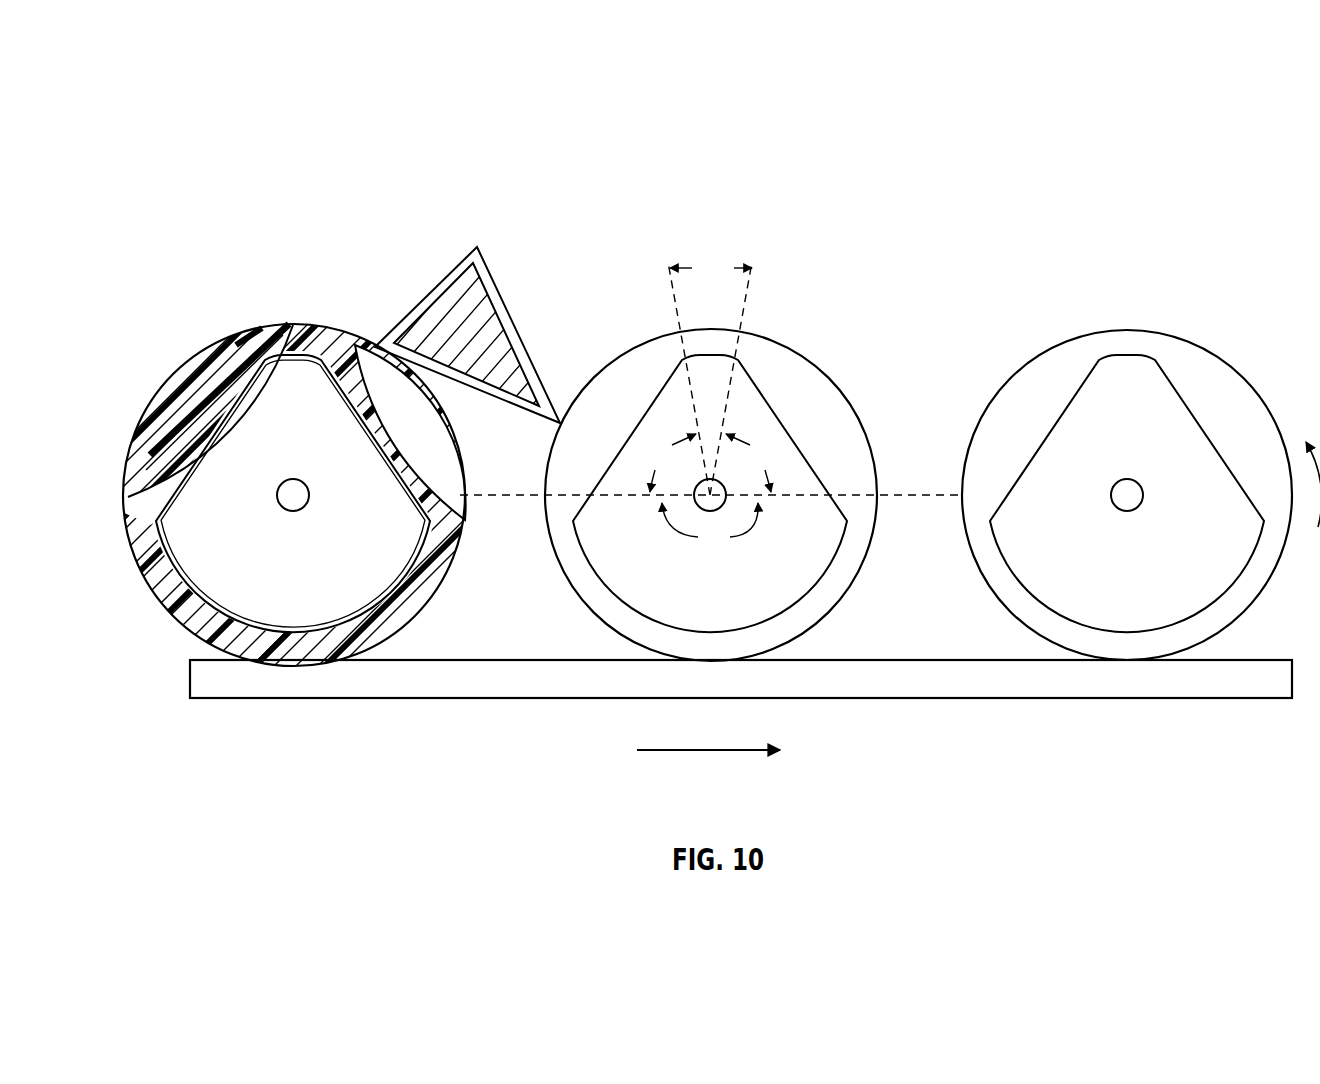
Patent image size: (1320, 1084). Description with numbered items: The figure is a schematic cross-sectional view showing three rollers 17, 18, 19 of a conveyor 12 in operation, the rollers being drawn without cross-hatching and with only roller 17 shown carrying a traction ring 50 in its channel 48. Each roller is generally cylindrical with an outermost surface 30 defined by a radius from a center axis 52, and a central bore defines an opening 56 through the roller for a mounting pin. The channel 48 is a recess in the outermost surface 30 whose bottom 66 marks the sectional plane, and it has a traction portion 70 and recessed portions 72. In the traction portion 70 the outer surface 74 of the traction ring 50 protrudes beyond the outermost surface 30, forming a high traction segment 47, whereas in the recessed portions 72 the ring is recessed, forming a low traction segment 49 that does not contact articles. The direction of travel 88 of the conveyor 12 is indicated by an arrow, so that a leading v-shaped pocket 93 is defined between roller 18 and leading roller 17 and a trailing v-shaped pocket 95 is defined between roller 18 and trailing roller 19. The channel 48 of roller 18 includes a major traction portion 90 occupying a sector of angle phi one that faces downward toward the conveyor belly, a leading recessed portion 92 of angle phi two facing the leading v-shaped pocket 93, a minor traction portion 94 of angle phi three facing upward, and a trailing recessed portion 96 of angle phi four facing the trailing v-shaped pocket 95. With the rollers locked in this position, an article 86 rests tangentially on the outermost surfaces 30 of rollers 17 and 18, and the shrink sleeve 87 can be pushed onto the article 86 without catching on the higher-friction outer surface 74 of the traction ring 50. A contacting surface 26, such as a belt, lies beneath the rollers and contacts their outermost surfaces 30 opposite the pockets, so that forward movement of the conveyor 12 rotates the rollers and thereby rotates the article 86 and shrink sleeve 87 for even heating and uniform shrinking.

The conveyor 12 is at (1148, 228).
The roller 17 is at (353, 490).
The roller 18 is at (710, 440).
The roller 19 is at (1155, 481).
The contacting surface 26 is at (1218, 687).
The outermost surface 30 is at (178, 373).
The high traction segment 47 is at (262, 328).
The channel 48 is at (383, 438).
The low traction segment 49 is at (150, 398).
The traction ring 50 is at (230, 368).
The center axis 52 is at (710, 492).
The opening 56 is at (1128, 497).
The bottom of the channel 66 is at (395, 607).
The traction portion 70 is at (308, 302).
The recessed portion 72 is at (356, 345).
The outer surface of the traction ring 74 is at (297, 318).
The article 86 is at (472, 328).
The shrink sleeve 87 is at (512, 320).
The direction of travel 88 is at (710, 752).
The major traction portion 90 is at (690, 637).
The leading recessed portion 92 is at (632, 430).
The leading v-shaped pocket 93 is at (512, 471).
The minor traction portion 94 is at (708, 352).
The trailing v-shaped pocket 95 is at (910, 388).
The trailing recessed portion 96 is at (787, 430).